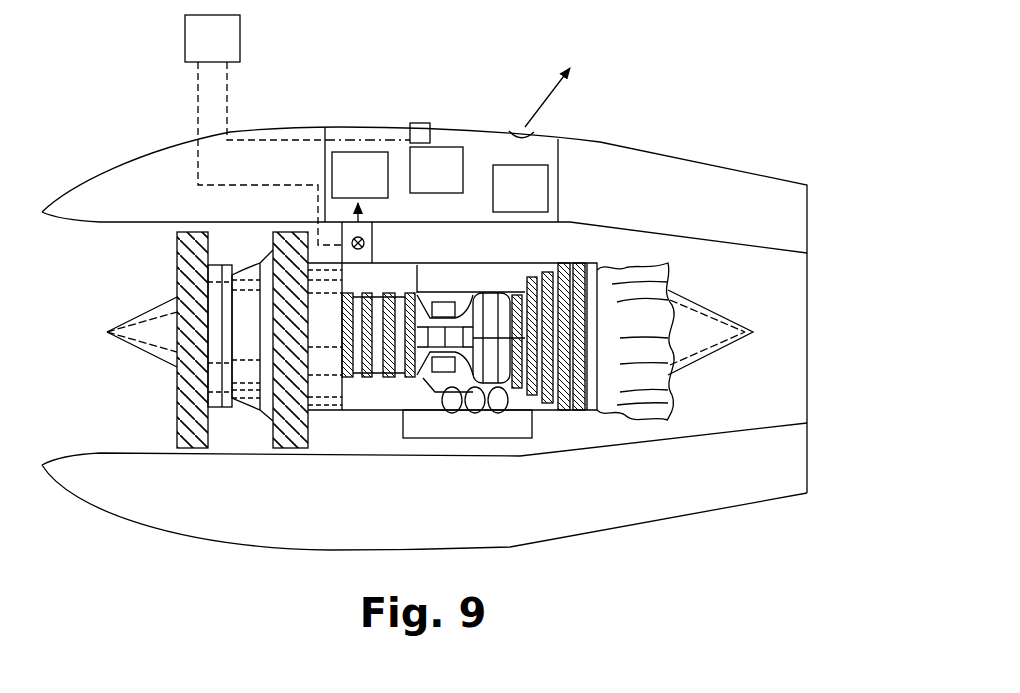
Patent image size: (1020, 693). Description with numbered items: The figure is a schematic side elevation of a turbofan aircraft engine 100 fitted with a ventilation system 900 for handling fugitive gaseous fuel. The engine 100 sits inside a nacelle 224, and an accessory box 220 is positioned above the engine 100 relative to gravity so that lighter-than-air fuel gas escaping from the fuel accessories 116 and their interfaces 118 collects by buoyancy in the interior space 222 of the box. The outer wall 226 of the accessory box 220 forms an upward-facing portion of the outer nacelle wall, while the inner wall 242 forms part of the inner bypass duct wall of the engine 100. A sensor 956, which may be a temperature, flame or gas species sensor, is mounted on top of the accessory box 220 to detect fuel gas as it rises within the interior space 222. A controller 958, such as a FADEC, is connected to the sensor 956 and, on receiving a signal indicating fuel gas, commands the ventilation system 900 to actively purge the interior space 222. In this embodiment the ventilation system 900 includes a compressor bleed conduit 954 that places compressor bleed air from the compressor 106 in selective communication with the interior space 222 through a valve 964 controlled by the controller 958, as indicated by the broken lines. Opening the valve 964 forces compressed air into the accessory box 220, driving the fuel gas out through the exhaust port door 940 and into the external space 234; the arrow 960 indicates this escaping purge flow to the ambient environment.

The engine 100 is at (110, 320).
The compressor 106 is at (425, 378).
The fuel accessory 116 is at (378, 189).
The interface 118 is at (478, 207).
The accessory box 220 is at (317, 136).
The interior space 222 is at (553, 153).
The nacelle 224 is at (152, 165).
The outer wall 226 is at (363, 127).
The external space 234 is at (385, 83).
The inner wall 242 is at (565, 225).
The ventilation system 900 is at (398, 70).
The exhaust port door 940 is at (514, 130).
The compressor bleed conduit 954 is at (365, 247).
The sensor 956 is at (422, 122).
The controller 958 is at (263, 130).
The flow direction 960 is at (557, 111).
The valve 964 is at (366, 240).